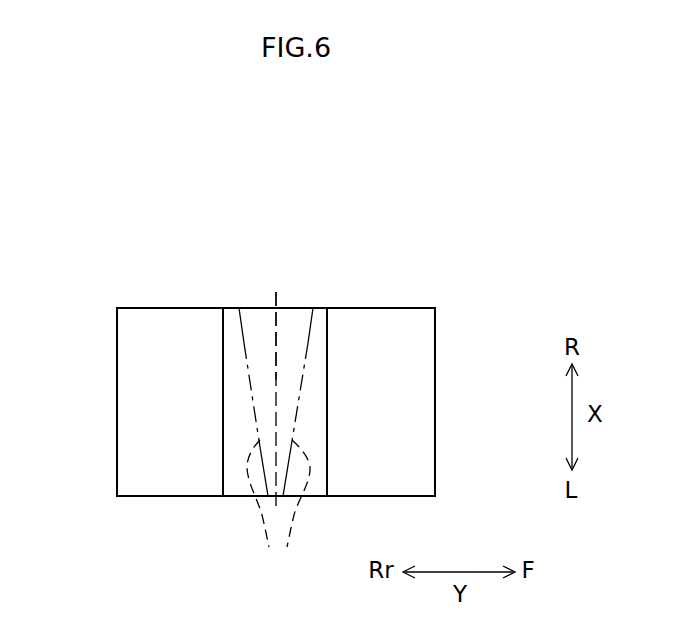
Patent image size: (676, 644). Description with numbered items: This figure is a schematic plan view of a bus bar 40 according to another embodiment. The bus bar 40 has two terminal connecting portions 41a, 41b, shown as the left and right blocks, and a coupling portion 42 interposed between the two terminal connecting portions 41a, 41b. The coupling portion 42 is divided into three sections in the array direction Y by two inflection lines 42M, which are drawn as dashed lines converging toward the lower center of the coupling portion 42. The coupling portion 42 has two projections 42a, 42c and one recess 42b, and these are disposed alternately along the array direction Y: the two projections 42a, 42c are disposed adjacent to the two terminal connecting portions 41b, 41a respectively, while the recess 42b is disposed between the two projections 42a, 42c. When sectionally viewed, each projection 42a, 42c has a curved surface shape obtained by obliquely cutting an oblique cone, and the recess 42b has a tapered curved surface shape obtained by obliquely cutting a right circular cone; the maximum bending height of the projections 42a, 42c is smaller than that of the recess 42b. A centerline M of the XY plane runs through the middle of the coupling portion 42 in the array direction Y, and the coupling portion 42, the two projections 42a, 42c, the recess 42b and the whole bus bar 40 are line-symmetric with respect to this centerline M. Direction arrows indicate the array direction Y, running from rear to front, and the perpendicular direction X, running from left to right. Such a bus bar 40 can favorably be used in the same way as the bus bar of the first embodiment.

The bus bar 40 is at (60, 239).
The terminal connecting portion 41a is at (385, 325).
The terminal connecting portion 41b is at (155, 320).
The coupling portion 42 is at (352, 220).
The projection 42a is at (234, 335).
The recess 42b is at (256, 332).
The projection 42c is at (318, 327).
The centerline M is at (278, 372).
The inflection line 42M is at (278, 509).